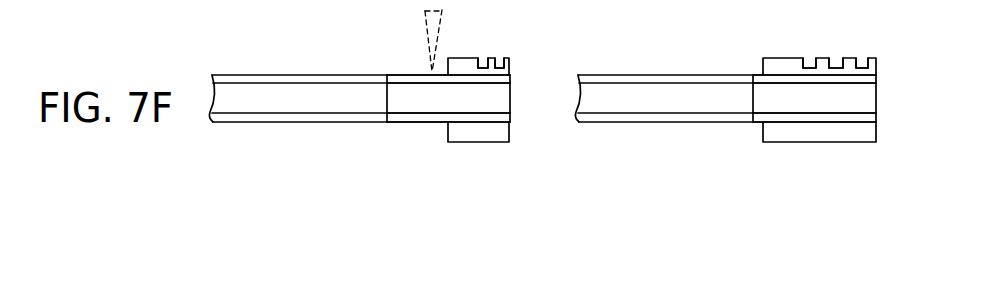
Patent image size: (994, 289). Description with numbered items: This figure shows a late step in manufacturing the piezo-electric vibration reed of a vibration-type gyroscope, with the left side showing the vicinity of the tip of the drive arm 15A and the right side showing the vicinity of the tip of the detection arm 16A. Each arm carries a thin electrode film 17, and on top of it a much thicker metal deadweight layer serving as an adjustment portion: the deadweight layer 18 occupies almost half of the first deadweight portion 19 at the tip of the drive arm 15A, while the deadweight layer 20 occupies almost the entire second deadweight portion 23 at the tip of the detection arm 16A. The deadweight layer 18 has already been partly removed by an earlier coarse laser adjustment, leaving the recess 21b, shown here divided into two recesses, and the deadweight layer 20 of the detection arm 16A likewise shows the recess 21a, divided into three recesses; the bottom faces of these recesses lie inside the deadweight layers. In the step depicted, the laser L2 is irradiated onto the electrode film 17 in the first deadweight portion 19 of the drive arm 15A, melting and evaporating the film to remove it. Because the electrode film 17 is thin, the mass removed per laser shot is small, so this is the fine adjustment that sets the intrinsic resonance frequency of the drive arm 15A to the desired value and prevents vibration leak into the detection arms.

The drive arm 15A is at (295, 97).
The detection arm 16A is at (660, 98).
The electrode film 17 is at (400, 78).
The deadweight layer 18 is at (465, 67).
The first deadweight portion 19 is at (382, 188).
The deadweight layer 20 is at (798, 67).
The recess 21a is at (857, 63).
The recess 21b is at (502, 62).
The second deadweight portion 23 is at (747, 188).
The laser L2 is at (425, 62).